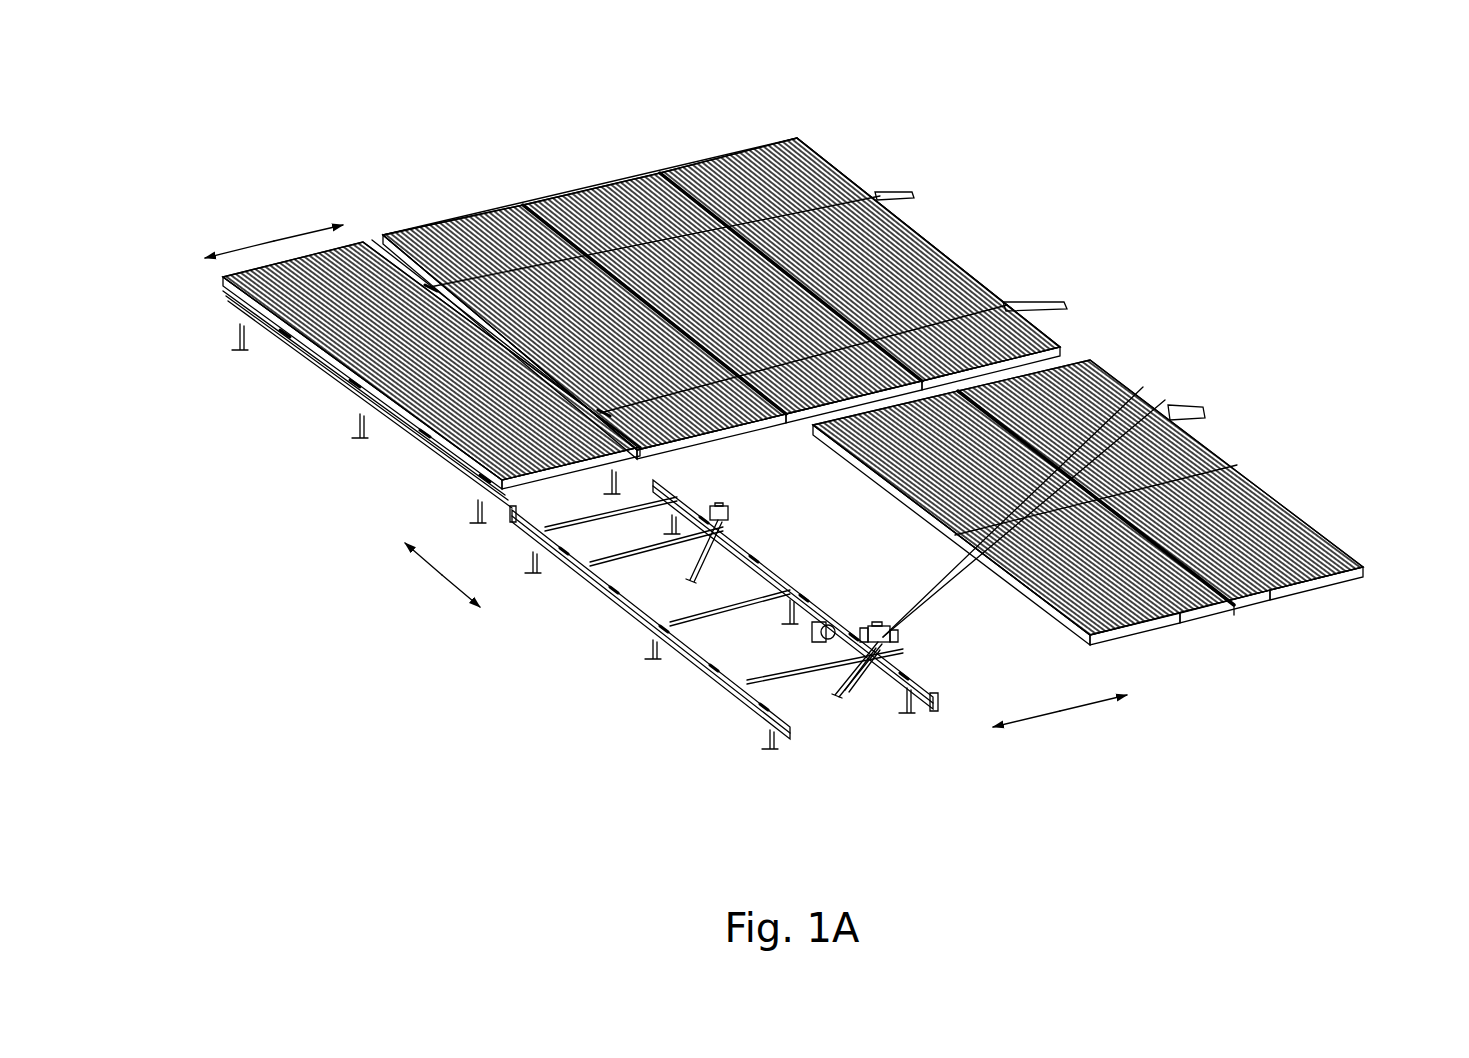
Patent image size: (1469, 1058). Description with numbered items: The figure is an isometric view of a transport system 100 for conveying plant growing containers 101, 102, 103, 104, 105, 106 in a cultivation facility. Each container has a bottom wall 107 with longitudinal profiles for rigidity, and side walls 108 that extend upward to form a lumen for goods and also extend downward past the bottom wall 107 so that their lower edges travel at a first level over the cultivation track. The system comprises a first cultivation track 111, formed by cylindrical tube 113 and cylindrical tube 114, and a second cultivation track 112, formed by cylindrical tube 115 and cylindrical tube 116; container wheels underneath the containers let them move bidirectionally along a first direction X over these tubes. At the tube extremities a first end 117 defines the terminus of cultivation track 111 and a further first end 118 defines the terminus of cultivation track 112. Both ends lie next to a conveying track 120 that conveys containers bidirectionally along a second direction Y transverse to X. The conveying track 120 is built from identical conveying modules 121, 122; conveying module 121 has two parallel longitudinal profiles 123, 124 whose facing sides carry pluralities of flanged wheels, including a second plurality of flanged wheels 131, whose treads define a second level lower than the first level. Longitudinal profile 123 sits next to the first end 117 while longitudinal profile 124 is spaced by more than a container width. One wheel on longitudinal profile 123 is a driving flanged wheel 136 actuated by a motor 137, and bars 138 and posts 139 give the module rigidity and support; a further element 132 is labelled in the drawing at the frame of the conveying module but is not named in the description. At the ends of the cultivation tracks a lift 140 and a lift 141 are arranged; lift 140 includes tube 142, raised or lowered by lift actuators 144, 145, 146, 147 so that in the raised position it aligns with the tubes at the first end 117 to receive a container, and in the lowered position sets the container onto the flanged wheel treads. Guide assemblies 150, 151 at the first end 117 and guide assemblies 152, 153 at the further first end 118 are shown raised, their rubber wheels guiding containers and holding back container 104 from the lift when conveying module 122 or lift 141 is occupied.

The transport system 100 is at (1312, 160).
The plant growing container 101 is at (1160, 632).
The plant growing container 102 is at (1297, 597).
The plant growing container 103 is at (222, 278).
The plant growing container 104 is at (450, 213).
The plant growing container 105 is at (593, 183).
The plant growing container 106 is at (750, 157).
The bottom wall 107 is at (1113, 632).
The side walls 108 is at (1082, 640).
The first cultivation track 111 is at (1287, 448).
The second cultivation track 112 is at (1007, 227).
The cylindrical tube 113 is at (1350, 560).
The cylindrical tube 114 is at (1200, 412).
The cylindrical tube 115 is at (1067, 307).
The cylindrical tube 116 is at (897, 207).
The first end 117 is at (947, 685).
The further first end 118 is at (373, 240).
The conveying track 120 is at (692, 439).
The conveying module 121 is at (627, 682).
The conveying module 122 is at (305, 415).
The longitudinal profile 123 is at (925, 690).
The longitudinal profile 124 is at (826, 642).
The second plurality of flanged wheels 131 is at (655, 650).
The support leg 132 is at (565, 580).
The driving flanged wheel 136 is at (880, 640).
The motor 137 is at (730, 685).
The bars 138 is at (530, 503).
The posts 139 is at (545, 560).
The lift 140 is at (540, 588).
The lift 141 is at (265, 372).
The tube 142 is at (845, 632).
The lift actuator 144 is at (873, 637).
The lift actuator 145 is at (1165, 400).
The lift actuator 146 is at (520, 535).
The lift actuator 147 is at (1143, 387).
The guide assembly 150 is at (1237, 465).
The guide assembly 151 is at (1000, 278).
The guide assembly 152 is at (882, 632).
The guide assembly 153 is at (722, 512).